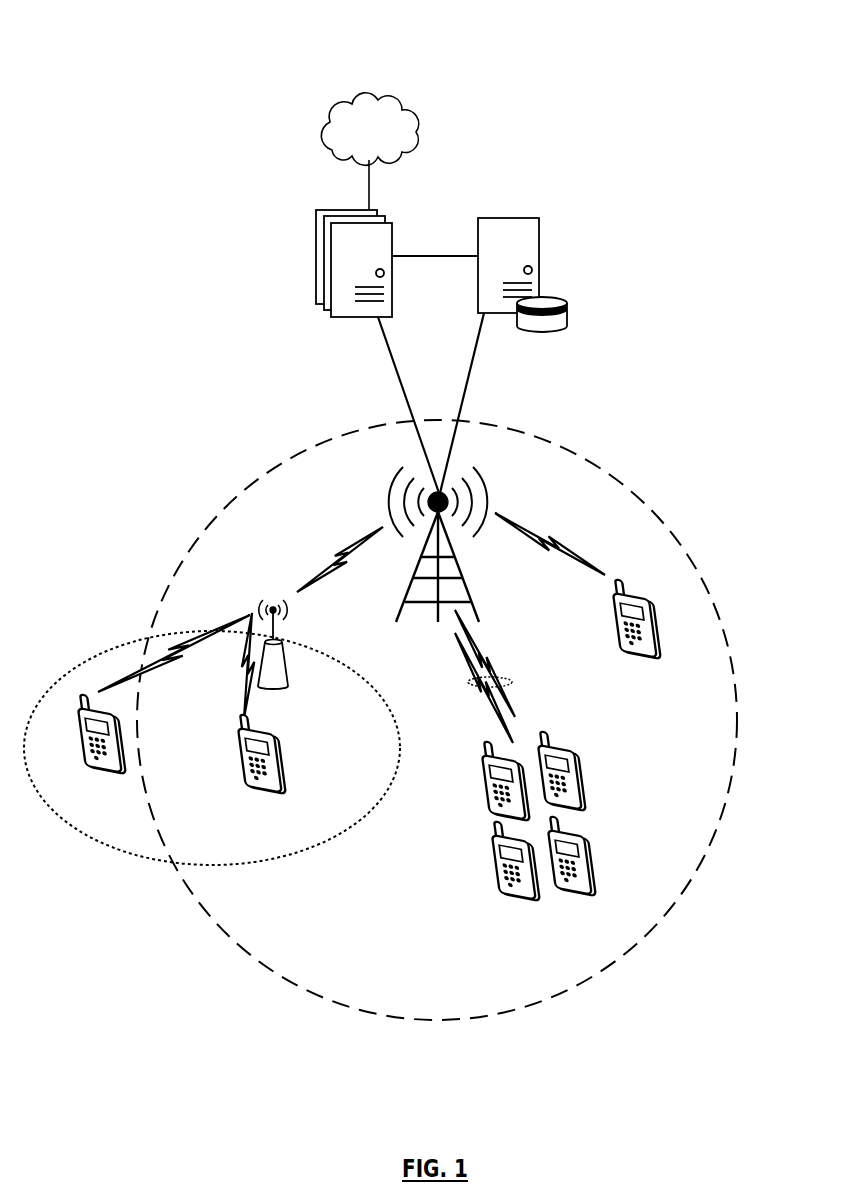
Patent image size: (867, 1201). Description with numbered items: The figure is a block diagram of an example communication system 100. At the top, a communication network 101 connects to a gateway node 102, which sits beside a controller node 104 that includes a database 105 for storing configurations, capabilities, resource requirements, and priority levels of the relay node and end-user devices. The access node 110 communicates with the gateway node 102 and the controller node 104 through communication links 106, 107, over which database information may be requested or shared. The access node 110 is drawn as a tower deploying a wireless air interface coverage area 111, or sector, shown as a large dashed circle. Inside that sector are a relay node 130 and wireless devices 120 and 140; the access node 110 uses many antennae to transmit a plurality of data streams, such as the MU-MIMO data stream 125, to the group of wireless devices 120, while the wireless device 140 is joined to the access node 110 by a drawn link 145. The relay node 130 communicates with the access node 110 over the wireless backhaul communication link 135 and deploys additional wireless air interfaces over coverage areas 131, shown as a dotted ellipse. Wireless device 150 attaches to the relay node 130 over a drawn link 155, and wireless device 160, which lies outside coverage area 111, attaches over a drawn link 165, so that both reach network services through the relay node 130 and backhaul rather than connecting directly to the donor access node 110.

The communication system 100 is at (692, 42).
The communication network 101 is at (387, 139).
The gateway node 102 is at (336, 211).
The controller node 104 is at (539, 217).
The database 105 is at (565, 299).
The communication link 106 is at (476, 351).
The communication link 107 is at (385, 339).
The access node 110 is at (463, 598).
The coverage area 111 is at (718, 824).
The wireless devices 120 is at (600, 746).
The MU-MIMO data stream 125 is at (509, 681).
The relay node 130 is at (272, 694).
The coverage areas 131 is at (303, 853).
The communication link 135 is at (328, 558).
The wireless device 140 is at (640, 655).
The wireless link between base station and user equipment 140 145 is at (565, 541).
The wireless device 150 is at (272, 793).
The wireless link between relay node and user equipment 150 155 is at (245, 700).
The wireless device 160 is at (115, 768).
The wireless link between relay node and user equipment 160 165 is at (125, 672).